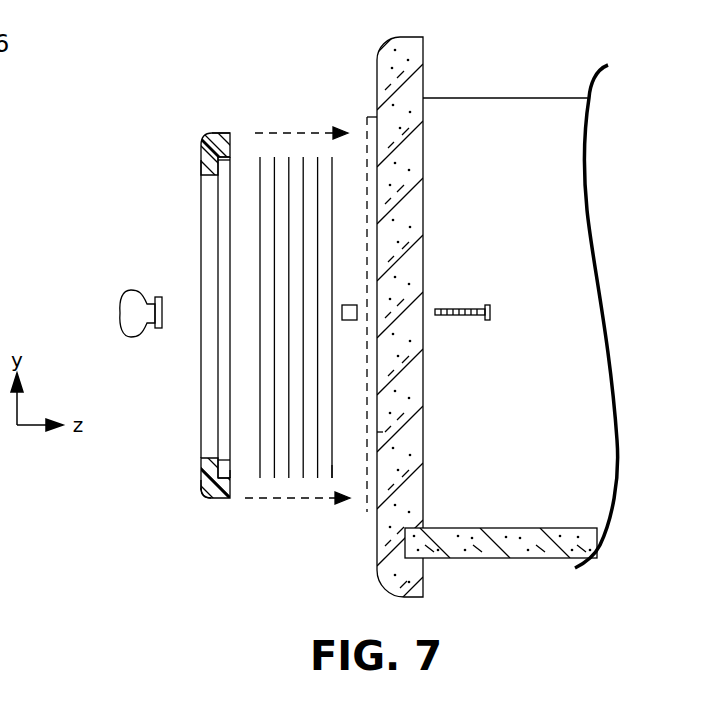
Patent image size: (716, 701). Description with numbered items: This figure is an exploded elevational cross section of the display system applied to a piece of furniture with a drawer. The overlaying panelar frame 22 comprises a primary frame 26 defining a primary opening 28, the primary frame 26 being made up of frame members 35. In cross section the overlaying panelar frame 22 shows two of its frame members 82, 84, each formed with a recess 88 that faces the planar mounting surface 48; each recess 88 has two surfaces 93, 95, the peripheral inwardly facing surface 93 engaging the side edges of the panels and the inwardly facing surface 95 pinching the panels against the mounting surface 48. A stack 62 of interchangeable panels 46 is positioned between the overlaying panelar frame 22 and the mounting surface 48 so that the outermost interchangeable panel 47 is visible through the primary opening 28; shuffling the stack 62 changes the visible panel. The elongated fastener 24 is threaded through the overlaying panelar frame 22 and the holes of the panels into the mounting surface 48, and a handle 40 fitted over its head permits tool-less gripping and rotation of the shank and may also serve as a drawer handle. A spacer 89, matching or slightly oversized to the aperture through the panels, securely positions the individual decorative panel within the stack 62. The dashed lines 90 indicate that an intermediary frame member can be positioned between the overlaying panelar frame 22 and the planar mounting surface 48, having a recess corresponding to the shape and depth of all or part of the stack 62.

The overlaying panelar frame 22 is at (201, 477).
The elongated fastener 24 is at (443, 307).
The primary frame 26 is at (218, 133).
The primary opening 28 is at (192, 229).
The frame member 35 is at (200, 167).
The handle 40 is at (120, 315).
The interchangeable panel 46 is at (333, 468).
The outermost interchangeable panel 47 is at (258, 157).
The planar mounting surface 48 is at (377, 78).
The stack 62 is at (308, 138).
The frame member 82 is at (210, 498).
The frame member 84 is at (208, 140).
The recess 88 is at (227, 470).
The spacer 89 is at (350, 305).
The dashed lines 90 is at (377, 432).
The peripheral inwardly facing surface 93 is at (222, 167).
The inwardly facing surface 95 is at (218, 463).